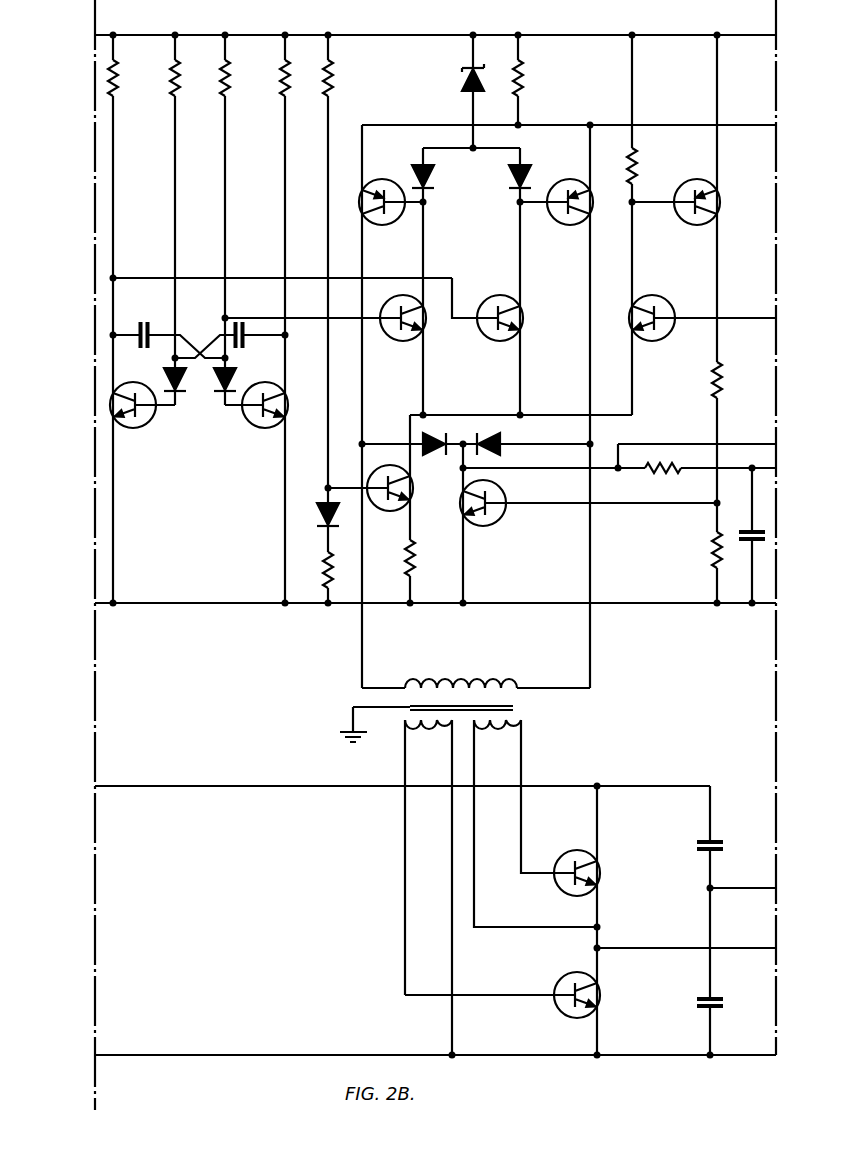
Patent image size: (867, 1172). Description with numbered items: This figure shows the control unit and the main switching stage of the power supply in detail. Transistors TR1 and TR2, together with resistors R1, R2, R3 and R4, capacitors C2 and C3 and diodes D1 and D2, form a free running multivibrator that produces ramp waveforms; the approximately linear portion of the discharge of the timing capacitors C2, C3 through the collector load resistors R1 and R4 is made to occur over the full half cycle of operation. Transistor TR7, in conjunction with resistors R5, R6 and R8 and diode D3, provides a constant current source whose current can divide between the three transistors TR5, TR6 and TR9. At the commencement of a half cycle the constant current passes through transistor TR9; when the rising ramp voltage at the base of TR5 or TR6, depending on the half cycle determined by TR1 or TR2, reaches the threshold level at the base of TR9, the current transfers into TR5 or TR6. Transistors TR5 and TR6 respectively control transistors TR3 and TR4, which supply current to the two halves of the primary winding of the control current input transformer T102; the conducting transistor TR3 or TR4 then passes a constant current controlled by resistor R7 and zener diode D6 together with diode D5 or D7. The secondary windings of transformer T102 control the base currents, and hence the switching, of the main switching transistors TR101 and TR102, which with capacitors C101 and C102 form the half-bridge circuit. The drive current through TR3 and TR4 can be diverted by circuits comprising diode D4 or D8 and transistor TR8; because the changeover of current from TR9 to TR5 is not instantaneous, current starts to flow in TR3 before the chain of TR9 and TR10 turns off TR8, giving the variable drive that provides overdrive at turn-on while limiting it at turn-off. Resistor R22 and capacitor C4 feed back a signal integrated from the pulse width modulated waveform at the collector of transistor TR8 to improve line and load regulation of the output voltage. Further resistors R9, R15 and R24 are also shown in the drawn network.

The resistor R1 is at (119, 82).
The resistor R2 is at (181, 82).
The resistor R3 is at (231, 82).
The resistor R4 is at (291, 82).
The resistor R5 is at (322, 570).
The resistor R6 is at (334, 82).
The resistor R7 is at (523, 84).
The resistor R8 is at (415, 560).
The resistor R9 is at (637, 160).
The resistor R15 is at (712, 549).
The resistor R22 is at (663, 462).
The resistor R24 is at (723, 381).
The diode D1 is at (181, 396).
The diode D2 is at (219, 396).
The diode D3 is at (318, 512).
The diode D4 is at (418, 441).
The diode D5 is at (430, 184).
The zener diode D6 is at (462, 85).
The diode D7 is at (512, 181).
The diode D8 is at (500, 441).
The timing capacitor C2 is at (248, 347).
The timing capacitor C3 is at (138, 347).
The capacitor C4 is at (746, 545).
The capacitor C101 is at (703, 838).
The capacitor C102 is at (703, 995).
The transistor TR1 is at (139, 428).
The transistor TR2 is at (258, 428).
The transistor TR3 is at (383, 226).
The transistor TR4 is at (572, 226).
The transistor TR5 is at (386, 342).
The transistor TR6 is at (480, 342).
The transistor TR7 is at (376, 512).
The transistor TR8 is at (493, 524).
The transistor TR9 is at (669, 339).
The transistor TR10 is at (686, 226).
The switching transistor TR101 is at (599, 1003).
The switching transistor TR102 is at (603, 873).
The control current input transformer T102 is at (520, 704).